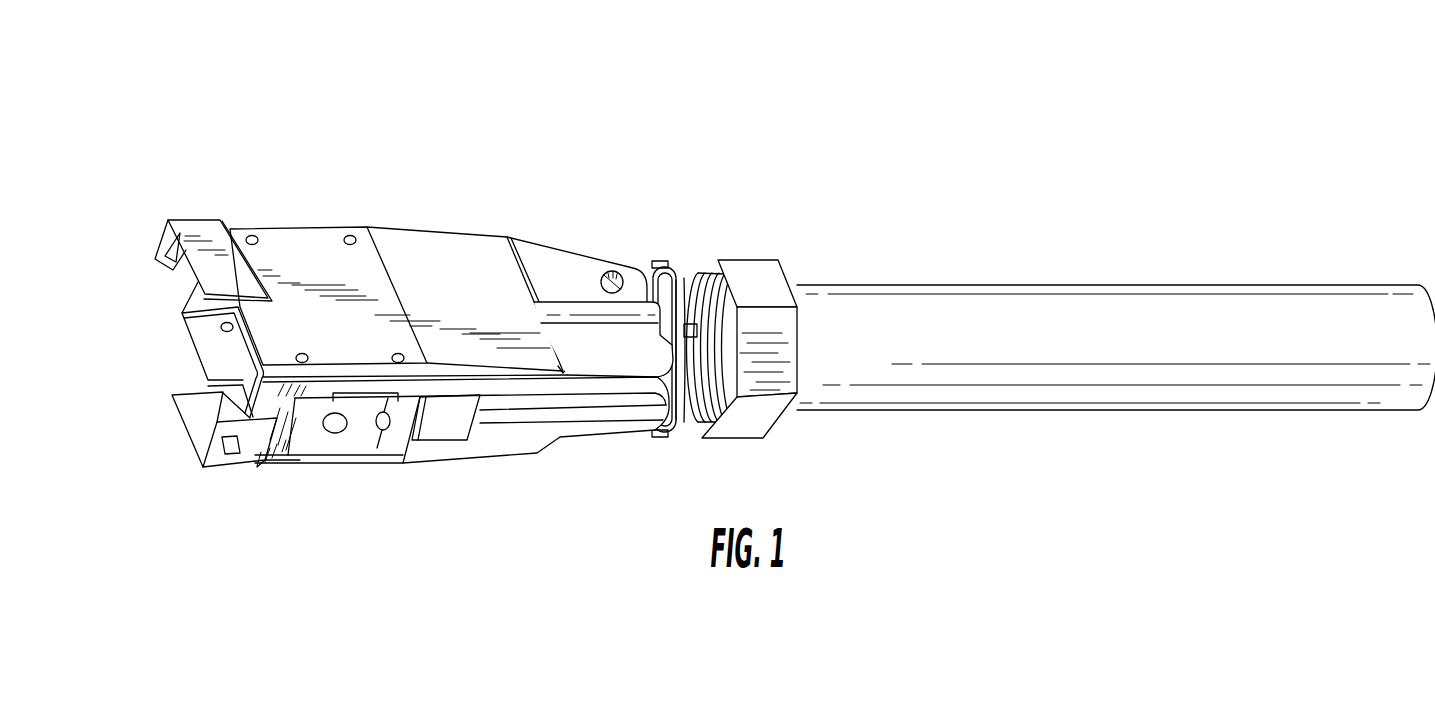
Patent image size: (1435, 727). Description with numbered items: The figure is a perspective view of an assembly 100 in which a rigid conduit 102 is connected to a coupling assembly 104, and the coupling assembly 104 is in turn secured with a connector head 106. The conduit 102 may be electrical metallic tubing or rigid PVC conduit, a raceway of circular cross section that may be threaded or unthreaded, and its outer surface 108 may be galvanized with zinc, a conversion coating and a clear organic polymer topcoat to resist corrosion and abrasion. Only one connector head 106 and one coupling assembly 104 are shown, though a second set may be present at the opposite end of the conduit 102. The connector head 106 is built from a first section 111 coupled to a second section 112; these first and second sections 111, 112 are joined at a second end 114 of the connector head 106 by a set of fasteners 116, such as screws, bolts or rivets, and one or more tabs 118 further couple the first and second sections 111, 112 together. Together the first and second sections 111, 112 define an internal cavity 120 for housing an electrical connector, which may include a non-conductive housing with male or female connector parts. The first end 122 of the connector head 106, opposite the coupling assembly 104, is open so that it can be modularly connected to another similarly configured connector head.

The assembly 100 is at (875, 124).
The conduit 102 is at (1192, 311).
The coupling assembly 104 is at (693, 240).
The connector head 106 is at (437, 220).
The outer surface 108 is at (979, 308).
The first section 111 is at (483, 245).
The second section 112 is at (513, 445).
The second end 114 is at (641, 255).
The fasteners 116 is at (610, 271).
The tabs 118 is at (435, 430).
The internal cavity 120 is at (228, 349).
The first end 122 is at (177, 195).